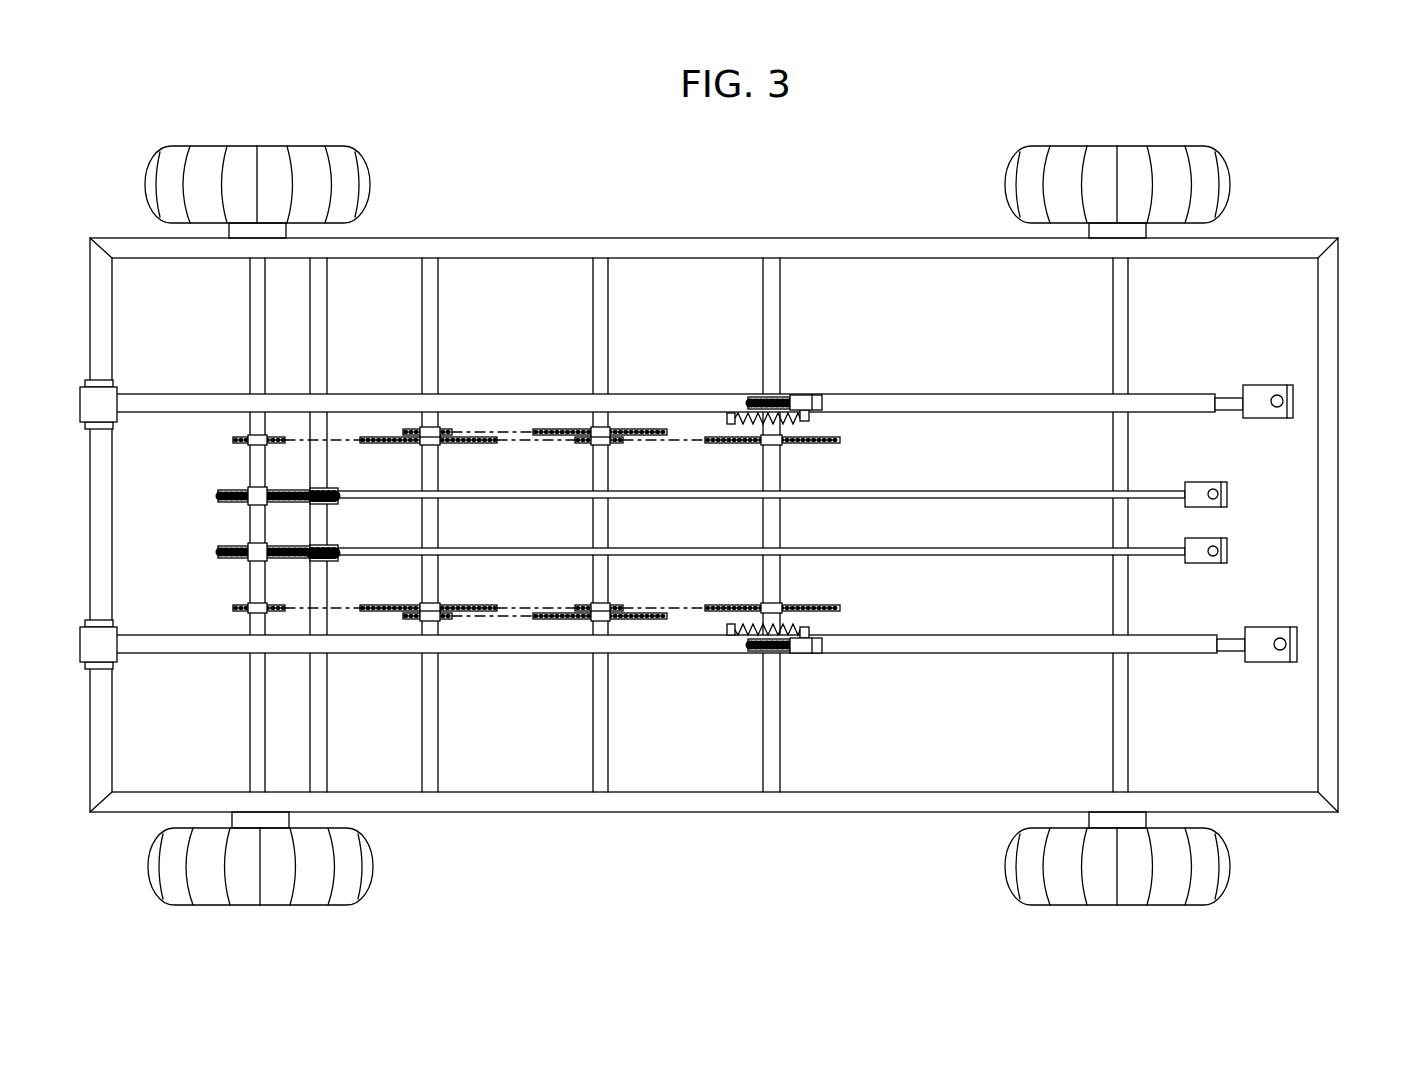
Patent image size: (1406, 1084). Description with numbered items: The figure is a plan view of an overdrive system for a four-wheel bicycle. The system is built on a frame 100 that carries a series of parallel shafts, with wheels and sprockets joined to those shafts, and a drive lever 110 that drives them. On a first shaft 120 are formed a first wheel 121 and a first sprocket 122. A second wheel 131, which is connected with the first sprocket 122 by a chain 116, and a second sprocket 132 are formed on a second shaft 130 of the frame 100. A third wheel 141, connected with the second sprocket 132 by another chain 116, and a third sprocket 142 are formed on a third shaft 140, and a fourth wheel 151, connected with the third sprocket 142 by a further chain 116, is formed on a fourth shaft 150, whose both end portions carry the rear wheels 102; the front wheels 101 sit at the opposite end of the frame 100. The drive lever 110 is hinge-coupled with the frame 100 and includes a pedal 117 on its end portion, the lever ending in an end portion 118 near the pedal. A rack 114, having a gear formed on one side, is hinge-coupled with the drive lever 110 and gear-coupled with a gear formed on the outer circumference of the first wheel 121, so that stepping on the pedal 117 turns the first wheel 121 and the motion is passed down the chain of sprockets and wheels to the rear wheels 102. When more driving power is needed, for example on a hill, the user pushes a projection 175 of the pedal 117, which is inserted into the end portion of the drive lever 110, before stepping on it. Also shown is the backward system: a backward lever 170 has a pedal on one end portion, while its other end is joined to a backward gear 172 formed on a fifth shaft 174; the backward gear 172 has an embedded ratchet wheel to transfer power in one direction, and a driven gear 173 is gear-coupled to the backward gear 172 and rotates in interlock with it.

The frame 100 is at (687, 248).
The right wheel 101 is at (1210, 158).
The rear wheels 102 is at (343, 158).
The drive lever 110 is at (980, 394).
The rack 114 is at (812, 395).
The chain 116 is at (350, 428).
The pedal 117 is at (1292, 389).
The shaft end portion 118 is at (1172, 397).
The first shaft 120 is at (775, 750).
The first wheel 121 is at (748, 396).
The first sprocket 122 is at (840, 444).
The second shaft 130 is at (603, 750).
The second wheel 131 is at (580, 444).
The second sprocket 132 is at (558, 427).
The third shaft 140 is at (432, 750).
The third wheel 141 is at (410, 428).
The third sprocket 142 is at (455, 444).
The fourth shaft 150 is at (255, 727).
The fourth wheel 151 is at (236, 434).
The backward lever 170 is at (1045, 490).
The backward gear 172 is at (336, 490).
The driven gear 173 is at (222, 490).
The fifth shaft 174 is at (318, 748).
The projection 175 is at (1284, 403).